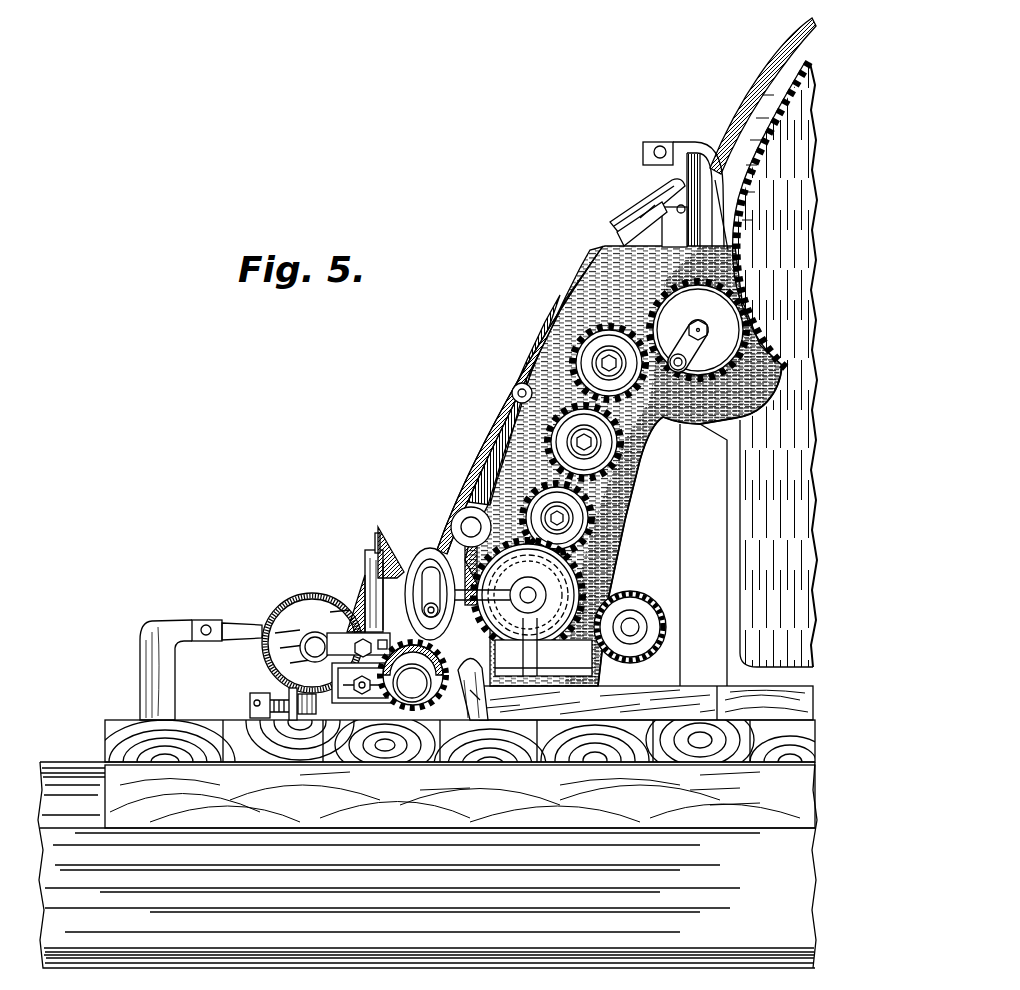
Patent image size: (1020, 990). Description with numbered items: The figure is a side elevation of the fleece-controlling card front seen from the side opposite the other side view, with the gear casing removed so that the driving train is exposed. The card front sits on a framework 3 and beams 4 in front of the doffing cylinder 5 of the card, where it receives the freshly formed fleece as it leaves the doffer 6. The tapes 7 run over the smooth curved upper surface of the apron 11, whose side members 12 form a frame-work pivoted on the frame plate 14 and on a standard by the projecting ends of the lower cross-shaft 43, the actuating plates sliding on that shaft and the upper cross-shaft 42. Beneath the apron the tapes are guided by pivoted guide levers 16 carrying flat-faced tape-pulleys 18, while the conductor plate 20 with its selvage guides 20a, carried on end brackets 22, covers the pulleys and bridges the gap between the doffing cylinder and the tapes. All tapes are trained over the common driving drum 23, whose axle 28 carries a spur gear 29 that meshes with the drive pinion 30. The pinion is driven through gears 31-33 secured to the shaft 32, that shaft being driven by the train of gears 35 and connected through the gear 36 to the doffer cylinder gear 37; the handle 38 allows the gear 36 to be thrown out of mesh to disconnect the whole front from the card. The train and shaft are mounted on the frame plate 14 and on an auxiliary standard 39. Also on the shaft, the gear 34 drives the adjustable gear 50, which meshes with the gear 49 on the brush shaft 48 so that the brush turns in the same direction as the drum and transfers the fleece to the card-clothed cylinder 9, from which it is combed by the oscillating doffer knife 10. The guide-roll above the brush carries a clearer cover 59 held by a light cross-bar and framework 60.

The framework 3 is at (776, 752).
The beams 4 is at (427, 865).
The doffing cylinder 5 is at (742, 90).
The doffer 6 is at (663, 149).
The tapes 7 is at (477, 442).
The card-clothed cylinder 9 is at (297, 594).
The oscillating doffer knife 10 is at (238, 620).
The apron 11 is at (478, 440).
The side members 12 is at (483, 473).
The frame plate 14 is at (584, 276).
The guide frames or levers 16 is at (472, 695).
The tape-pulleys 18 is at (626, 229).
The conductor plate 20 is at (648, 220).
The selvage guides 20a is at (618, 217).
The end brackets 22 is at (674, 226).
The driving drum 23 is at (656, 590).
The axle 28 is at (641, 627).
The spur gear 29 is at (633, 600).
The drive pinion 30 is at (637, 688).
The gears 31-33 is at (566, 580).
The shaft 32 is at (527, 593).
The gear 34 is at (557, 573).
The train of gears 35 is at (580, 341).
The gear 36 is at (698, 330).
The doffer cylinder gear 37 is at (777, 364).
The handle 38 is at (695, 350).
The auxiliary standard 39 is at (531, 688).
The cross-shaft 42 is at (518, 388).
The cross-shaft 43 is at (467, 523).
The brush shaft 48 is at (413, 675).
The gear 49 is at (402, 655).
The adjustable gear 50 is at (380, 578).
The clearer cover 59 is at (388, 548).
The cross-bar and framework 60 is at (370, 565).